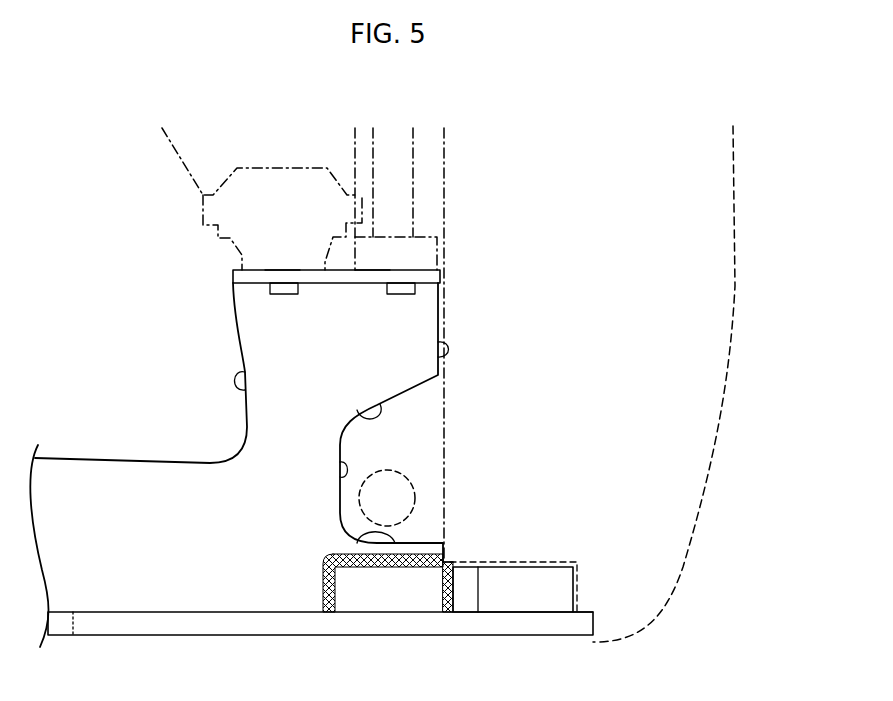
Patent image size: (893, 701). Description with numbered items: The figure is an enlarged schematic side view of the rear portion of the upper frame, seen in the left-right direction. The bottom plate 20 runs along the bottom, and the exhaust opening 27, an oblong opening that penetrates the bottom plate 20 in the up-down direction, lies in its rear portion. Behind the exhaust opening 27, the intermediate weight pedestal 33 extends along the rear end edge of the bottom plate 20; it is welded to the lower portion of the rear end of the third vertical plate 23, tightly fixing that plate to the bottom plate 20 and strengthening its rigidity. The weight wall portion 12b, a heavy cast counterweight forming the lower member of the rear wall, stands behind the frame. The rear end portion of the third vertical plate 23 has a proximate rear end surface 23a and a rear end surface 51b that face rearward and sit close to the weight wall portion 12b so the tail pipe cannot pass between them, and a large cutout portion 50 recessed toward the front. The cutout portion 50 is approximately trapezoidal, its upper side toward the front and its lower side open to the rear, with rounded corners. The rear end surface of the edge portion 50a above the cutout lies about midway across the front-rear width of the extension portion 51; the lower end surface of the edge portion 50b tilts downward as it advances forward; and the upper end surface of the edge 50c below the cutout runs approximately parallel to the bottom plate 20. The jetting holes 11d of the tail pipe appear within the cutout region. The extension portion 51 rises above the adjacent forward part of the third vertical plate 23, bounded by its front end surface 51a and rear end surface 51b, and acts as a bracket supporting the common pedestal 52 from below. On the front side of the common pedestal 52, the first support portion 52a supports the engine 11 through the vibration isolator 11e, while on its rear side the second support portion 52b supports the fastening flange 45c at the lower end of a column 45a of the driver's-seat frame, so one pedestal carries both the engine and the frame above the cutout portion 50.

The engine 11 is at (170, 143).
The vibration isolator 11e is at (200, 208).
The jetting holes 11d is at (410, 477).
The weight wall portion 12b is at (735, 197).
The bottom plate 20 is at (108, 623).
The third vertical plate 23 is at (80, 477).
The proximate rear end surface 23a is at (447, 550).
The exhaust opening 27 is at (425, 612).
The intermediate weight pedestal 33 is at (533, 593).
The columns 45a is at (413, 165).
The fastening flange 45c is at (425, 240).
The cutout portion 50 is at (276, 422).
The edge portion 50a is at (338, 475).
The edge portion 50b is at (355, 413).
The edge 50c is at (355, 537).
The extension portion 51 is at (250, 313).
The front end surface 51a is at (245, 370).
The rear end surface 51b is at (438, 342).
The common pedestal 52 is at (440, 273).
The first support portion 52a is at (282, 268).
The second support portion 52b is at (372, 268).